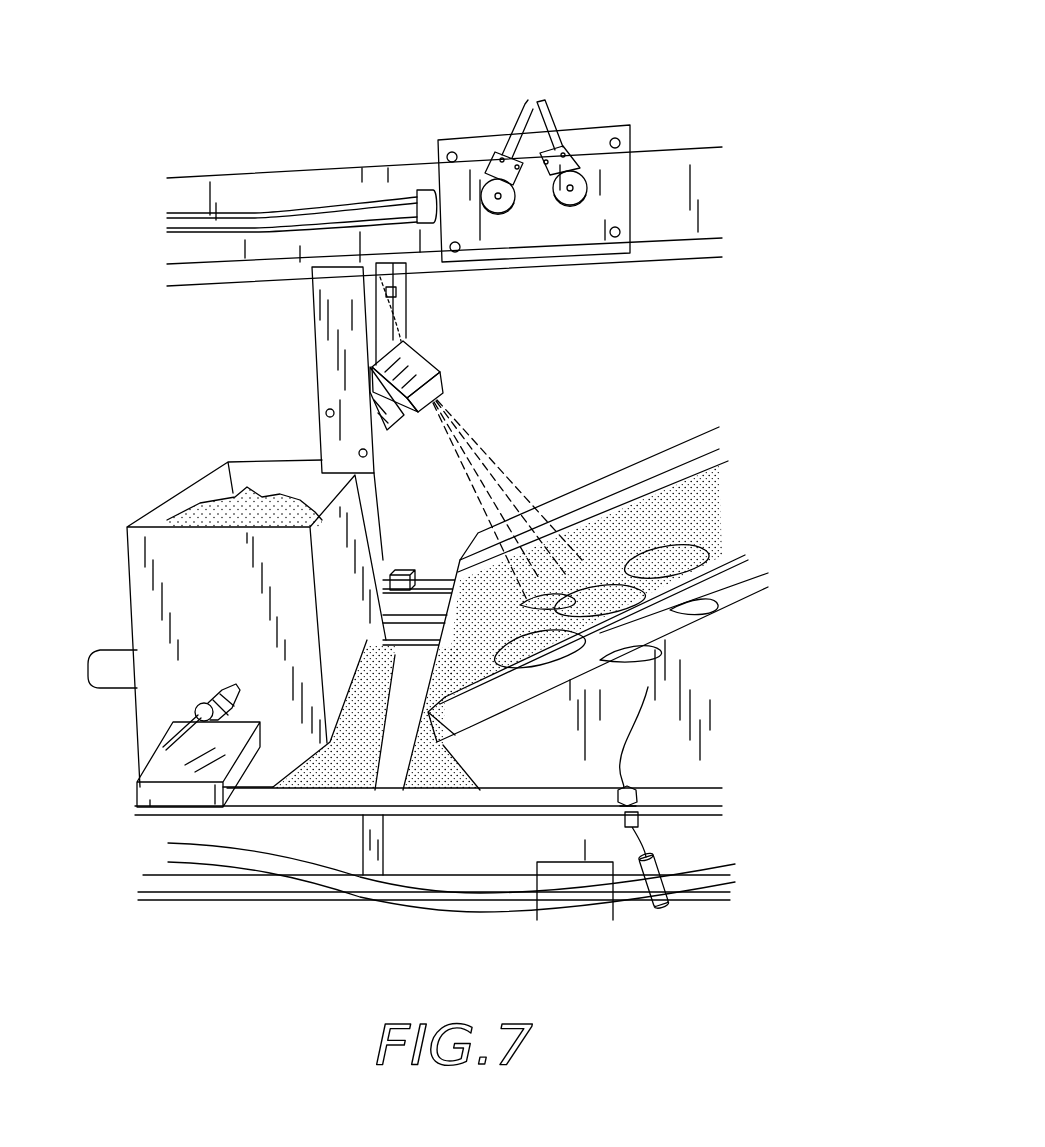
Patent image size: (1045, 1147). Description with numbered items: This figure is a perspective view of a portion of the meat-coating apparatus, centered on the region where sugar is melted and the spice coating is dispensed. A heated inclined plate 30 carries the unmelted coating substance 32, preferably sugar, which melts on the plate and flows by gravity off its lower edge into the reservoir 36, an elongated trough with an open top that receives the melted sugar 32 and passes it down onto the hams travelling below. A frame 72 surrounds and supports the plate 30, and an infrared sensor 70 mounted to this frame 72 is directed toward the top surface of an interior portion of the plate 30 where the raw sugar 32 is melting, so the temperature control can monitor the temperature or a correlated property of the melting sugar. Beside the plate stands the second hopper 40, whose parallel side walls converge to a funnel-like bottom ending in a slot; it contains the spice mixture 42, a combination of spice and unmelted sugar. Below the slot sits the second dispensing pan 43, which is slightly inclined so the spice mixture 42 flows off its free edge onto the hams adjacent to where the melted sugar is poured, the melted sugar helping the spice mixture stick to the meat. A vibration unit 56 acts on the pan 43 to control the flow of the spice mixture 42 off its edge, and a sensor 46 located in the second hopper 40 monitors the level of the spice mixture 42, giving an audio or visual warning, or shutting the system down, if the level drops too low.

The inclined plate 30 is at (690, 493).
The coating substance 32 is at (652, 510).
The reservoir 36 is at (410, 762).
The second hopper 40 is at (140, 557).
The spice mixture 42 is at (243, 500).
The second dispensing pan 43 is at (403, 640).
The sensor 46 is at (197, 693).
The vibration unit 56 is at (113, 659).
The infrared sensor 70 is at (423, 365).
The frame 72 is at (650, 182).